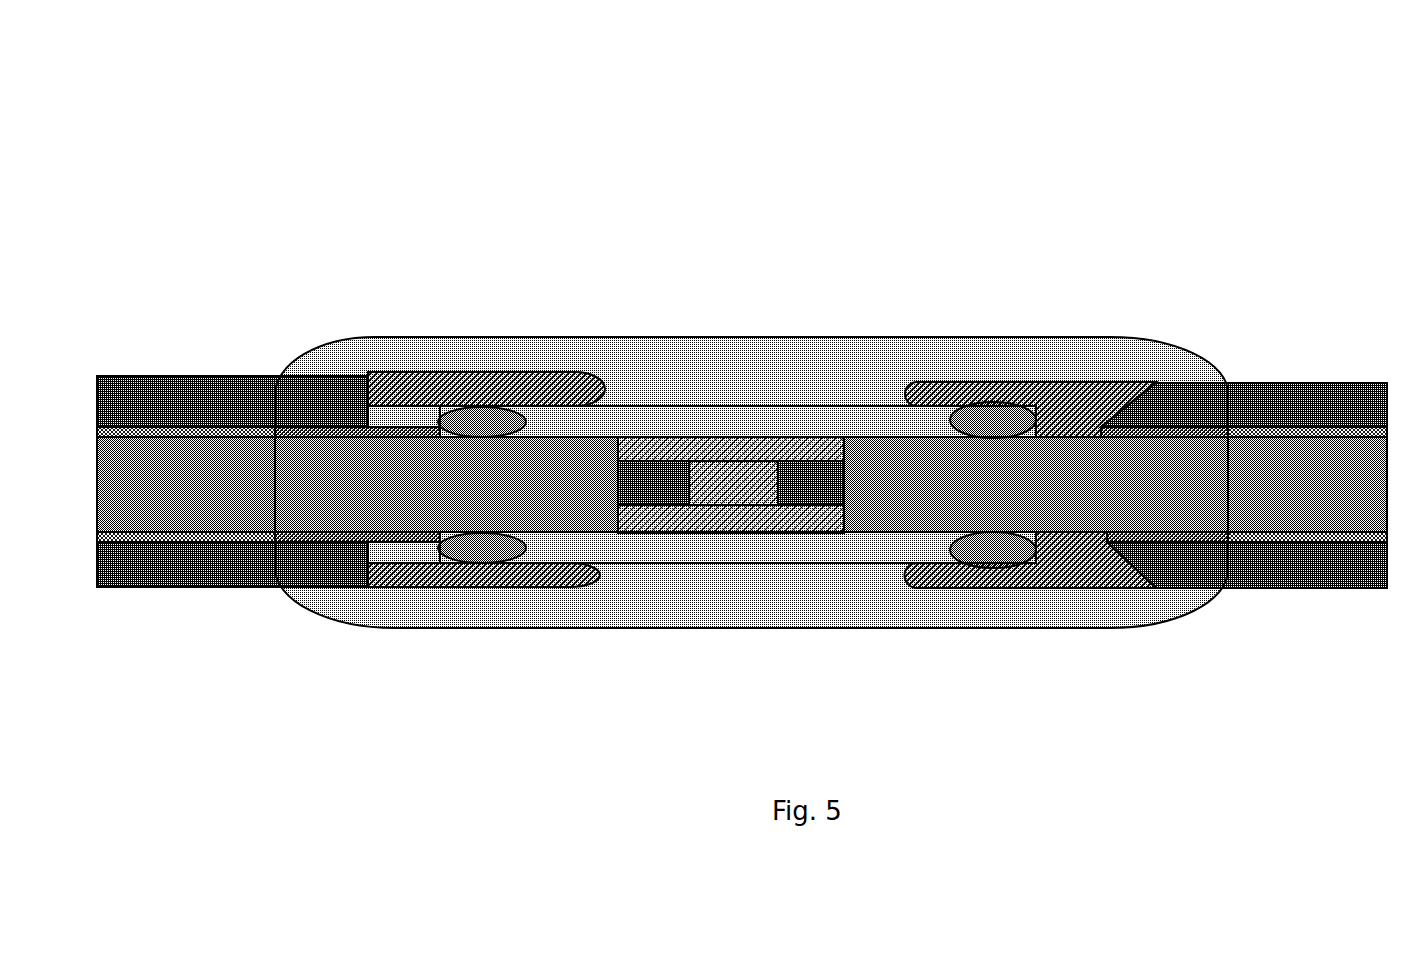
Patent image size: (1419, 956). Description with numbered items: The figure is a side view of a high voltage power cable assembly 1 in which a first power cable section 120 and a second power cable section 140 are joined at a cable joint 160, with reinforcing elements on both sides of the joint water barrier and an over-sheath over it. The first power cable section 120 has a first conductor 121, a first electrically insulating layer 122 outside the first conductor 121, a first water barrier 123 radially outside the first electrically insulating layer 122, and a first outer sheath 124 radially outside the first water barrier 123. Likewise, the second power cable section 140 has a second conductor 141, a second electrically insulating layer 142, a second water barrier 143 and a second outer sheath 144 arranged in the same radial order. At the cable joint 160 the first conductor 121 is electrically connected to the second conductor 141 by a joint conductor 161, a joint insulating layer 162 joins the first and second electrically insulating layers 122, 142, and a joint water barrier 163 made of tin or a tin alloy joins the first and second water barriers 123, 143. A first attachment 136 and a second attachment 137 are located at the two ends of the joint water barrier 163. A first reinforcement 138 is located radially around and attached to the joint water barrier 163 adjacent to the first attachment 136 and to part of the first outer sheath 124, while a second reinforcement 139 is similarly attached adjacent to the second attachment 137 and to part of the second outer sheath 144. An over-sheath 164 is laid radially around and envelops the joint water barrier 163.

The high voltage power cable assembly 1 is at (265, 110).
The first power cable section 120 is at (310, 324).
The first conductor 121 is at (653, 483).
The first electrically insulating layer 122 is at (357, 484).
The first water barrier 123 is at (193, 428).
The first outer sheath 124 is at (232, 482).
The first attachment 136 is at (482, 485).
The second attachment 137 is at (993, 485).
The first reinforcement 138 is at (497, 382).
The second reinforcement 139 is at (1043, 387).
The second power cable section 140 is at (1214, 345).
The second conductor 141 is at (811, 483).
The second electrically insulating layer 142 is at (1115, 484).
The second water barrier 143 is at (1336, 437).
The second outer sheath 144 is at (1244, 485).
The cable joint 160 is at (738, 306).
The joint conductor 161 is at (752, 485).
The joint insulating layer 162 is at (745, 520).
The joint water barrier 163 is at (738, 486).
The over-sheath 164 is at (742, 483).